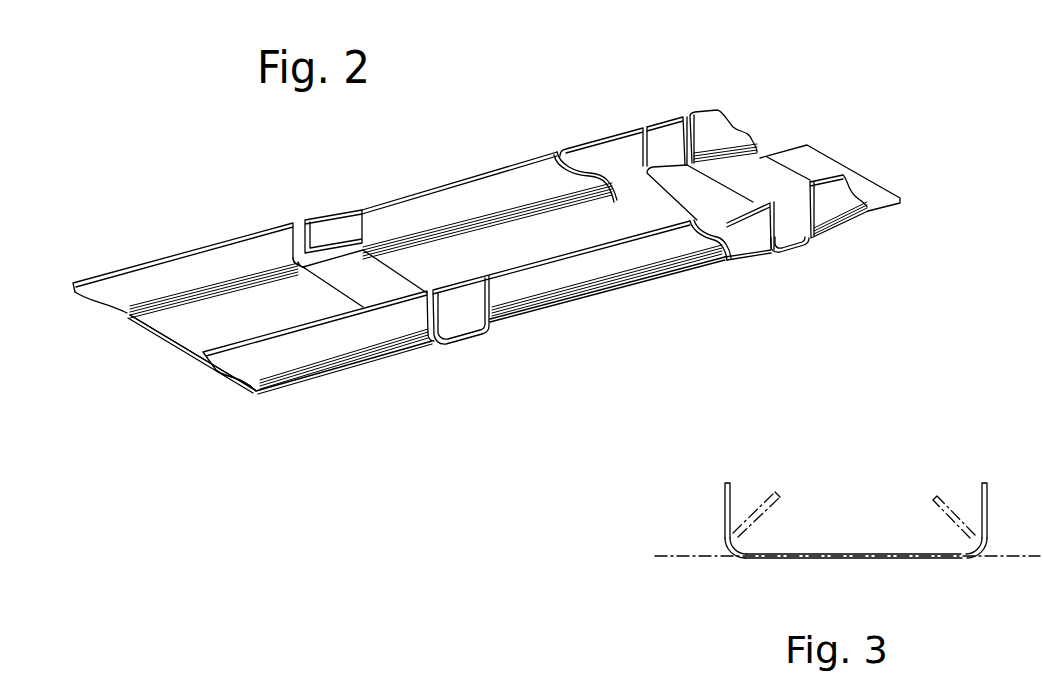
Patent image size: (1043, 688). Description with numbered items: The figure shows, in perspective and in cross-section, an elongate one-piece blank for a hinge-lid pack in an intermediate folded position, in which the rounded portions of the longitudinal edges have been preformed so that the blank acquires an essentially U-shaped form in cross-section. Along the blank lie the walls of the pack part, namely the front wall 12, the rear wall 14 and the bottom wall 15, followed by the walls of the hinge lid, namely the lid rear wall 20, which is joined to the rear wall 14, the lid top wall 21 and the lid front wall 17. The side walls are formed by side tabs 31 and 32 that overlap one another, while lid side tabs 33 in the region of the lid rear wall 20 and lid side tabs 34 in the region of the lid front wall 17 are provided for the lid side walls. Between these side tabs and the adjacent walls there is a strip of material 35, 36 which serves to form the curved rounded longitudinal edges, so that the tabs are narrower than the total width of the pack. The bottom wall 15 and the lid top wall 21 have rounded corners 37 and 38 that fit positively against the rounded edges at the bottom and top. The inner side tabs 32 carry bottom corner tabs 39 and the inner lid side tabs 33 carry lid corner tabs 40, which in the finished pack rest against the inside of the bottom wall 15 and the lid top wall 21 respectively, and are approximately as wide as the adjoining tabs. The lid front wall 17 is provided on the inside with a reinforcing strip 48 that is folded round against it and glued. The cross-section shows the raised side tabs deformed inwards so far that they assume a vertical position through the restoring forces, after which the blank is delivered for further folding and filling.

In FIG. 2, the front wall 12 is at (245, 325).
In FIG. 3, the front wall 12 is at (863, 560).
In FIG. 2, the rear wall 14 is at (500, 257).
In FIG. 2, the bottom wall 15 is at (348, 293).
In FIG. 2, the lid front wall 17 is at (743, 192).
In FIG. 2, the lid rear wall 20 is at (645, 216).
In FIG. 2, the lid top wall 21 is at (683, 202).
In FIG. 2, the side tab 31 is at (167, 273).
In FIG. 3, the side tab 31 is at (725, 504).
In FIG. 2, the side tab 32 is at (438, 200).
In FIG. 2, the lid side tab 33 is at (612, 153).
In FIG. 2, the lid side tab 34 is at (710, 130).
In FIG. 2, the strip of material 35 is at (127, 318).
In FIG. 3, the strip of material 35 is at (727, 548).
In FIG. 2, the strip of material 36 is at (332, 378).
In FIG. 3, the strip of material 36 is at (975, 560).
In FIG. 2, the rounded corner 37 is at (307, 268).
In FIG. 2, the rounded corner 38 is at (772, 250).
In FIG. 2, the bottom corner tab 39 is at (327, 227).
In FIG. 2, the lid corner tab 40 is at (663, 140).
In FIG. 2, the reinforcing strip 48 is at (812, 165).